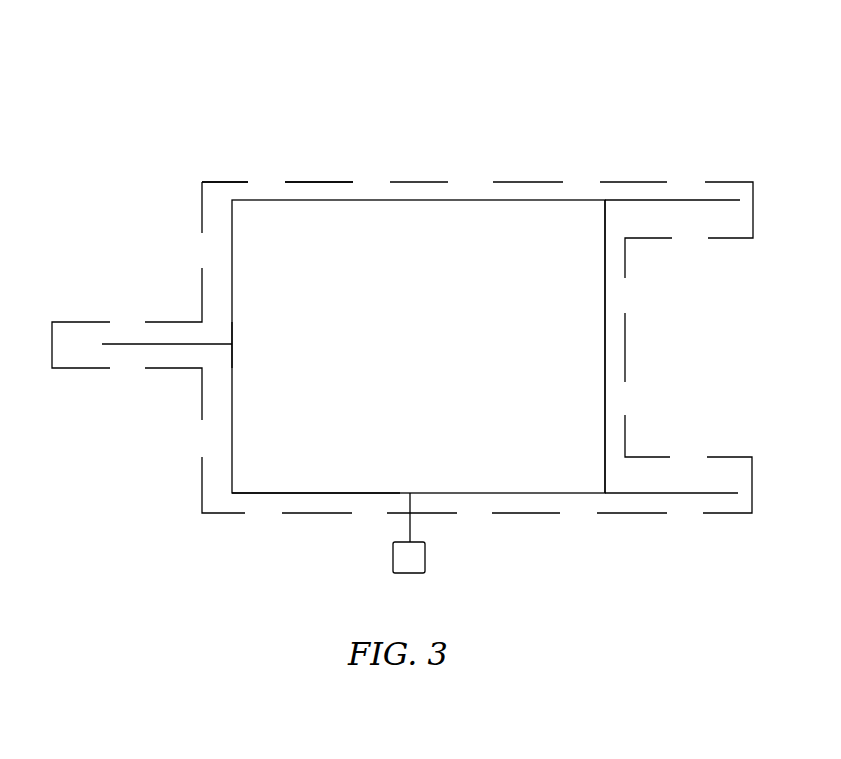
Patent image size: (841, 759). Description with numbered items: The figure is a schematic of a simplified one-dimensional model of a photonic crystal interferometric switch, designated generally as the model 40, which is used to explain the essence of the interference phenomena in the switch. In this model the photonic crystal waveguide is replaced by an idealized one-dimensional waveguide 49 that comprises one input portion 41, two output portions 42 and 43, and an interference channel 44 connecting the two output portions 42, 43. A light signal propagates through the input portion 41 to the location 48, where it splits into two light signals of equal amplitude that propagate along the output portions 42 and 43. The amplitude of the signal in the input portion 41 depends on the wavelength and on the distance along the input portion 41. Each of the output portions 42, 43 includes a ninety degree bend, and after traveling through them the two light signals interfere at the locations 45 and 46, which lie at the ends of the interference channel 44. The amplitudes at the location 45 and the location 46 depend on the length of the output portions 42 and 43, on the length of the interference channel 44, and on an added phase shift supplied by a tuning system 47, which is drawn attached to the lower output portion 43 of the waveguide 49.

The simplified one-dimensional model of the switch 40 is at (438, 123).
The input portion 41 is at (148, 346).
The output portion 42 is at (448, 200).
The output portion 43 is at (270, 494).
The interference channel 44 is at (606, 357).
The location 45 is at (607, 200).
The location 46 is at (599, 496).
The tuning system 47 is at (446, 514).
The location 48 is at (231, 342).
The idealized one-dimensional waveguide 49 is at (337, 181).